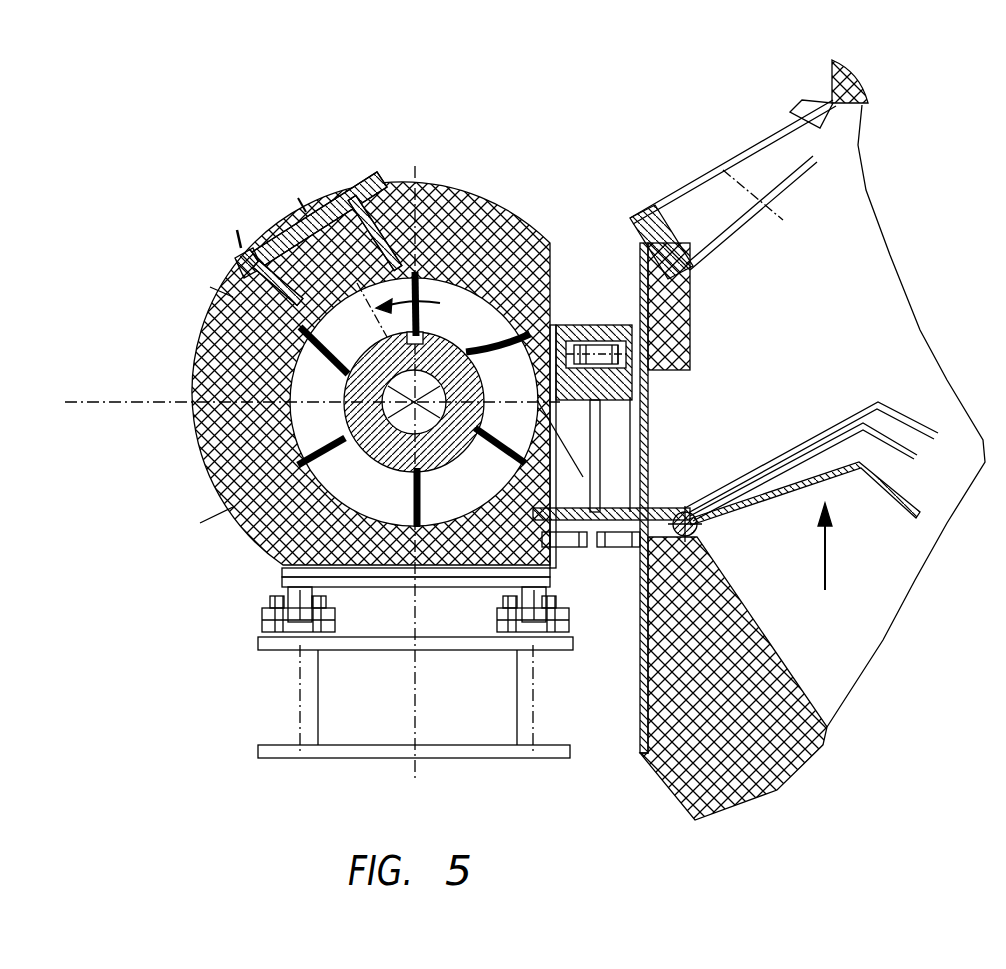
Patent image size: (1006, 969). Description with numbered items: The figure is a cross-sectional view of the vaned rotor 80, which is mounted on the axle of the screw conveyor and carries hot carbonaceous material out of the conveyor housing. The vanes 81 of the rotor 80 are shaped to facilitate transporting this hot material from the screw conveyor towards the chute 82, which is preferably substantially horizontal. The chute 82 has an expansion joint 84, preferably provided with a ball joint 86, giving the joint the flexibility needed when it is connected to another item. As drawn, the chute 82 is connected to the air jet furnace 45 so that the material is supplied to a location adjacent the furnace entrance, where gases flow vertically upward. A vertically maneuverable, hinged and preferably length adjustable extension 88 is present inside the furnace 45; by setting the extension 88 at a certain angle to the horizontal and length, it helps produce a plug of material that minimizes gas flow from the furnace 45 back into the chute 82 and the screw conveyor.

The vaned rotor 80 is at (448, 80).
The vanes 81 is at (463, 270).
The chute 82 is at (548, 248).
The expansion joint 84 is at (608, 418).
The ball joint 86 is at (572, 326).
The extension 88 is at (818, 470).
The air jet furnace 45 is at (827, 166).